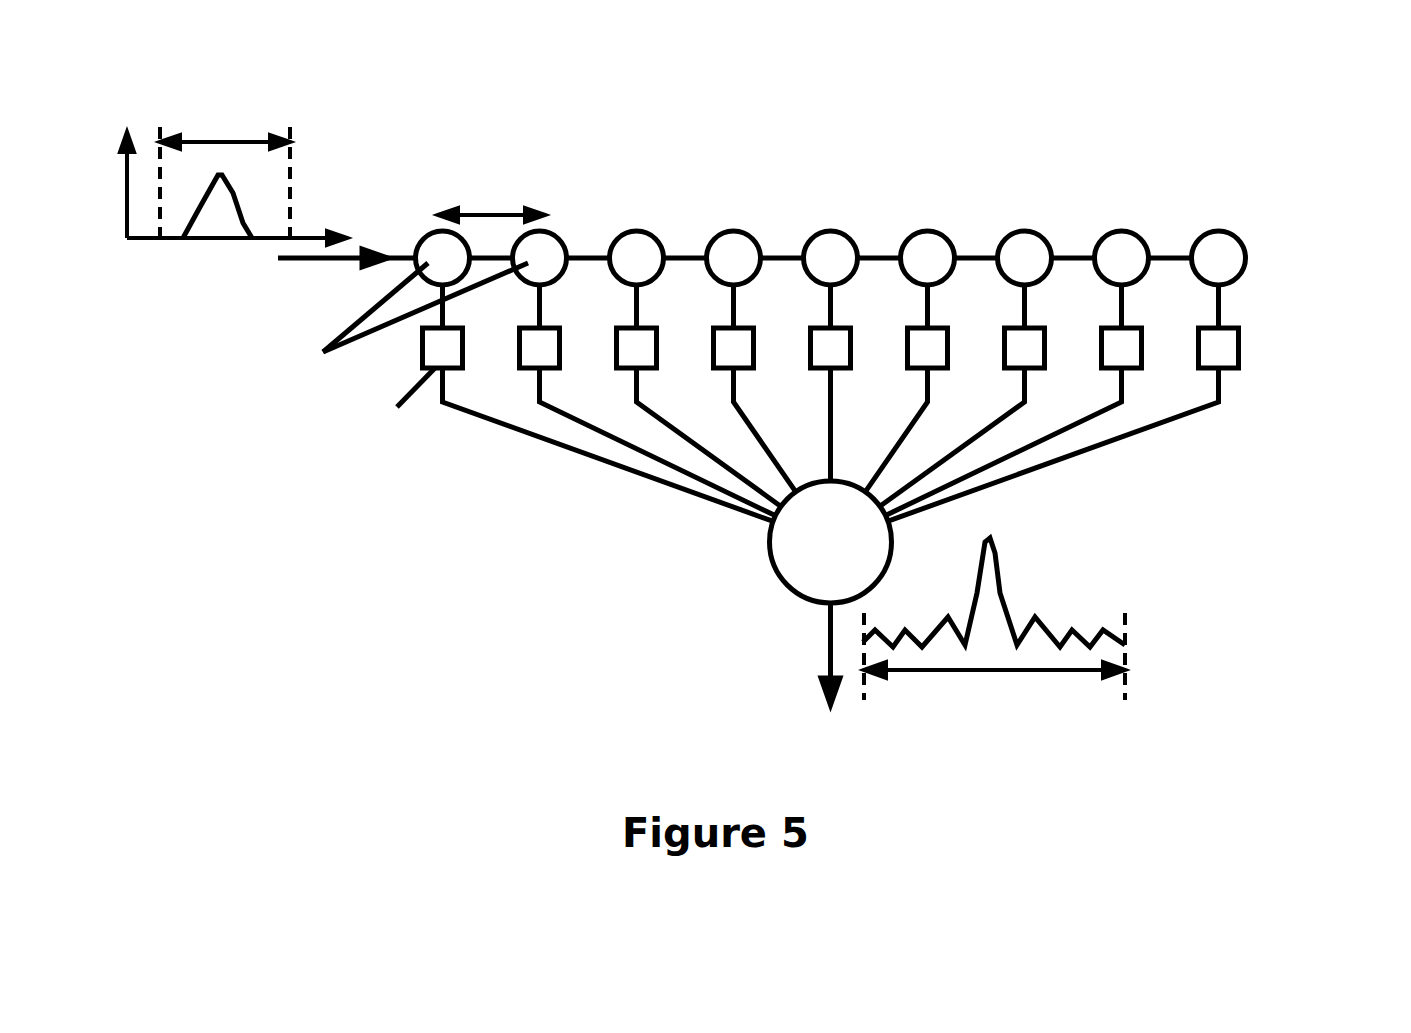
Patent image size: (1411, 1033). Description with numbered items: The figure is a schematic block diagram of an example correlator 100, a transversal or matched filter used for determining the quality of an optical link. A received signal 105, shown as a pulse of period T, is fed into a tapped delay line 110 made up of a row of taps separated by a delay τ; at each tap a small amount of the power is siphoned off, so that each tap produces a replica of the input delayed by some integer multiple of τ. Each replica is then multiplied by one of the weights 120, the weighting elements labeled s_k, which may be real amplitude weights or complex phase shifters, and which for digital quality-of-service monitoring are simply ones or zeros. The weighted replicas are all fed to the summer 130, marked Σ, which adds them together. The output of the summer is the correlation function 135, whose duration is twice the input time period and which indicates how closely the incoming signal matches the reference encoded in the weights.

The correlator 100 is at (756, 397).
The received signal 105 is at (320, 138).
The tapped delay line 110 is at (1282, 254).
The weights 120 is at (1270, 348).
The summer 130 is at (782, 578).
The correlation function 135 is at (1122, 563).